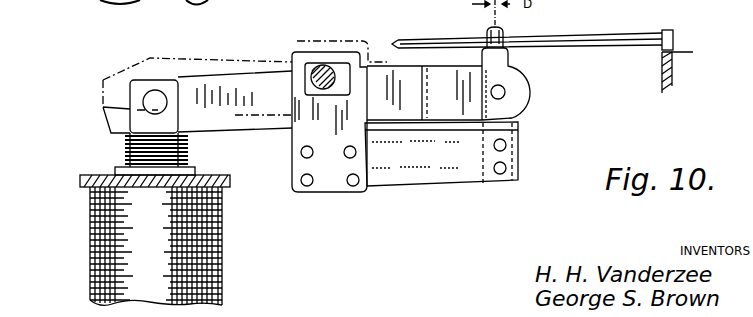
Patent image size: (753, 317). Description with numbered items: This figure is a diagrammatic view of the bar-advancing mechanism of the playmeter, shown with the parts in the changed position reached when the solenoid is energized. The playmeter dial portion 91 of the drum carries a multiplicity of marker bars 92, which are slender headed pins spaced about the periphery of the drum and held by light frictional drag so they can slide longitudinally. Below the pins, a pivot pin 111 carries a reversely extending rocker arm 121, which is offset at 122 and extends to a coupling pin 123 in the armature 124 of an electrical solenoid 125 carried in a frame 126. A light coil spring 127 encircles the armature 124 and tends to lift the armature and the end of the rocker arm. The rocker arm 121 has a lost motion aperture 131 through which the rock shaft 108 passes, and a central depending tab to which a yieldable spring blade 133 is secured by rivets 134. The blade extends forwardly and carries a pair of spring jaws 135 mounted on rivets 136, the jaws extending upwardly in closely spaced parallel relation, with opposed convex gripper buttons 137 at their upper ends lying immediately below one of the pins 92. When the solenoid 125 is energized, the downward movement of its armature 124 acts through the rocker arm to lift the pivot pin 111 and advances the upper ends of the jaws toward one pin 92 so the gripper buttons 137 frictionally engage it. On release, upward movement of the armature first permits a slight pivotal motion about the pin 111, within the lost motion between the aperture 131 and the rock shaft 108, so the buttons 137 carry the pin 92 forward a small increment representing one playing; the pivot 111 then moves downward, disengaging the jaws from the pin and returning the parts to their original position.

The playmeter dial portion 91 is at (683, 59).
The marker bars 92 is at (613, 33).
The rock shaft 108 is at (318, 68).
The pivot pin 111 is at (505, 92).
The rocker arm 121 is at (270, 103).
The offset 122 is at (405, 115).
The coupling pin 123 is at (155, 102).
The armature 124 is at (133, 118).
The electrical solenoid 125 is at (158, 236).
The frame 126 is at (218, 177).
The coil spring 127 is at (128, 151).
The lost motion aperture 131 is at (320, 97).
The spring blade 133 is at (430, 173).
The rivets 134 is at (312, 186).
The spring jaws 135 is at (508, 124).
The rivets 136 is at (506, 147).
The gripper buttons 137 is at (507, 50).